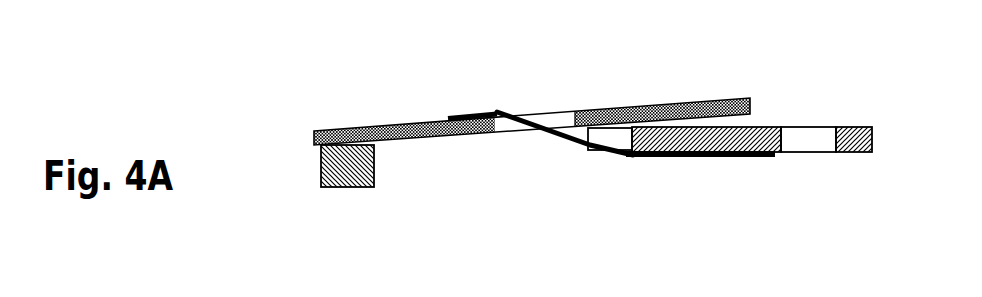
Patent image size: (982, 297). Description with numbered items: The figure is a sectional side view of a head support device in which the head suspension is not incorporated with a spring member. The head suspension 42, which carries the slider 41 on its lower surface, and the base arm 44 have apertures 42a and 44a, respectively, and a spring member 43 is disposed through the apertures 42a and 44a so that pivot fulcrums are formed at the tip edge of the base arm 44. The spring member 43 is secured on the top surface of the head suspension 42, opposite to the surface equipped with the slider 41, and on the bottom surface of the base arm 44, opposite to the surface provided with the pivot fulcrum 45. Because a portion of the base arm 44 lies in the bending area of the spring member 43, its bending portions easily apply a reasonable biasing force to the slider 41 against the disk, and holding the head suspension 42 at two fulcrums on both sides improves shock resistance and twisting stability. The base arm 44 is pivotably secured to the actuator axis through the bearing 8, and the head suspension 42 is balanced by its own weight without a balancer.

The bearing 8 is at (810, 137).
The slider 41 is at (347, 168).
The head suspension 42 is at (415, 135).
The aperture 42a is at (559, 110).
The spring member 43 is at (685, 158).
The base arm 44 is at (755, 127).
The aperture 44a is at (613, 140).
The contact spring 45 is at (583, 130).